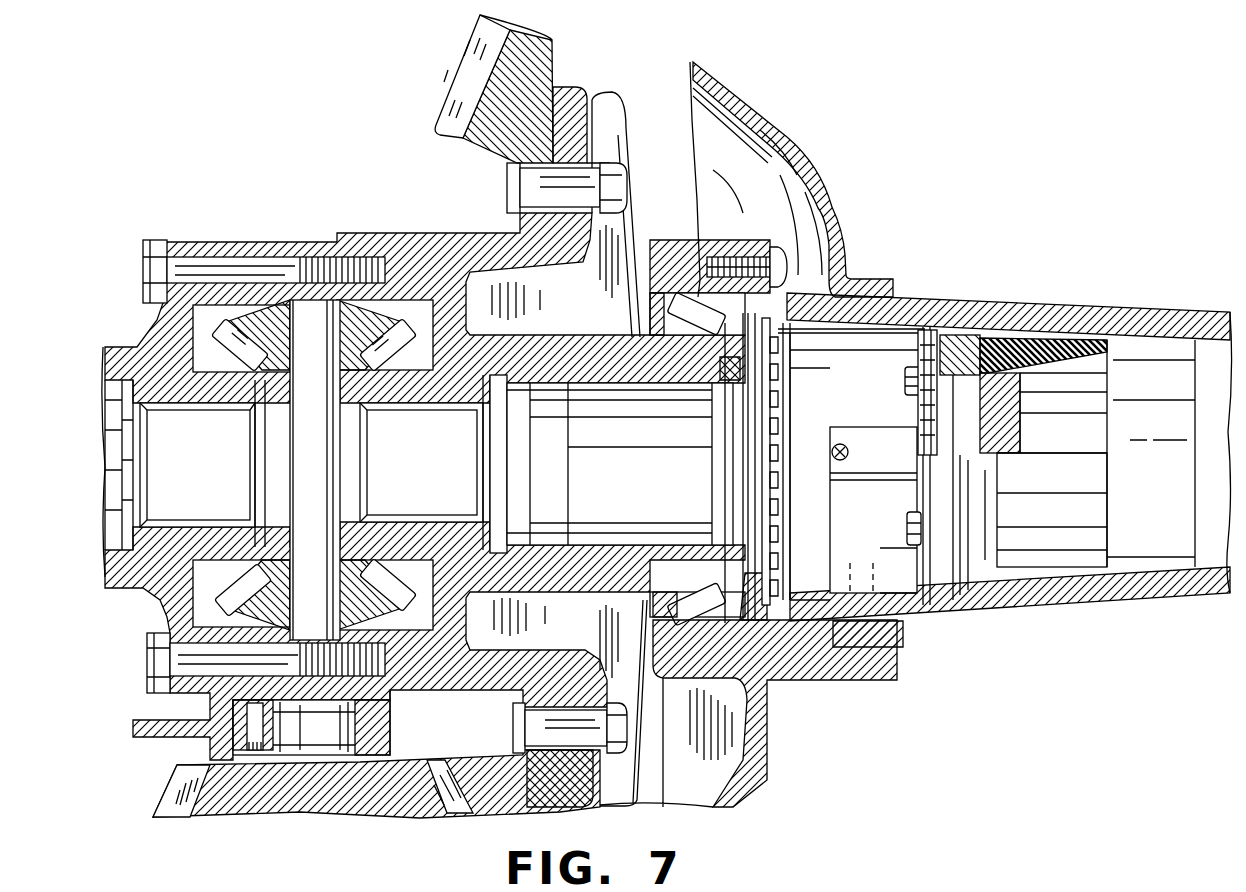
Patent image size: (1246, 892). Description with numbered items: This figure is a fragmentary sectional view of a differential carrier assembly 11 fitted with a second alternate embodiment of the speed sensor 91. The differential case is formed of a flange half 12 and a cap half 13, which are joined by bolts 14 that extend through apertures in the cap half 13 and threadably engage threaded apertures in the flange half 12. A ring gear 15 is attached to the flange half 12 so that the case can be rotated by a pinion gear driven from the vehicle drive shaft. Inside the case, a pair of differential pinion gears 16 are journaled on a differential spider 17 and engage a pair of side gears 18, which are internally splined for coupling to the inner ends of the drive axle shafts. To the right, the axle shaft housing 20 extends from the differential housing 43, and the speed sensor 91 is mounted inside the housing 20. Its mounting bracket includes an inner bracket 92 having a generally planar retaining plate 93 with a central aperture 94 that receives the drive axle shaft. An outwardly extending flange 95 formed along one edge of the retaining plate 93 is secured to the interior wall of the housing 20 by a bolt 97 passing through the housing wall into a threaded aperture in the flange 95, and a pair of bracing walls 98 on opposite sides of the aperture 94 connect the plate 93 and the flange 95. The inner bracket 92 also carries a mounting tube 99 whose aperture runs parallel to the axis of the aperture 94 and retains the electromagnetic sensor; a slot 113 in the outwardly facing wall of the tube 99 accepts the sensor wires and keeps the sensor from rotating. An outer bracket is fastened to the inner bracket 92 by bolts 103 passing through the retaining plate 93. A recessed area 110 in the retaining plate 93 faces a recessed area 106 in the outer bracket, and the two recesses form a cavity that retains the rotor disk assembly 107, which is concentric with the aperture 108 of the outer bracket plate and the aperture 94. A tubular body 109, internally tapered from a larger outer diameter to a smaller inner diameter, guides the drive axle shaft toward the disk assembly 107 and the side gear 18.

The differential carrier assembly 11 is at (228, 150).
The flange half 12 is at (440, 236).
The cap half 13 is at (118, 350).
The bolts 14 is at (148, 268).
The ring gear 15 is at (478, 86).
The differential pinion gears 16 is at (345, 345).
The differential spider 17 is at (318, 510).
The side gears 18 is at (155, 478).
The axle shaft housing 20 is at (1070, 607).
The differential housing 43 is at (752, 782).
The speed sensor 91 is at (1122, 427).
The inner bracket 92 is at (818, 566).
The retaining plate 93 is at (790, 346).
The central aperture 94 is at (922, 393).
The flange 95 is at (840, 563).
The bolt 97 is at (903, 650).
The bracing walls 98 is at (882, 550).
The mounting tube 99 is at (860, 440).
The bolts 103 is at (905, 380).
The recessed area 106 is at (980, 337).
The rotor disk assembly 107 is at (1110, 430).
The aperture 108 is at (1005, 375).
The tubular body 109 is at (1108, 362).
The recessed area 110 is at (955, 330).
The slot 113 is at (830, 456).